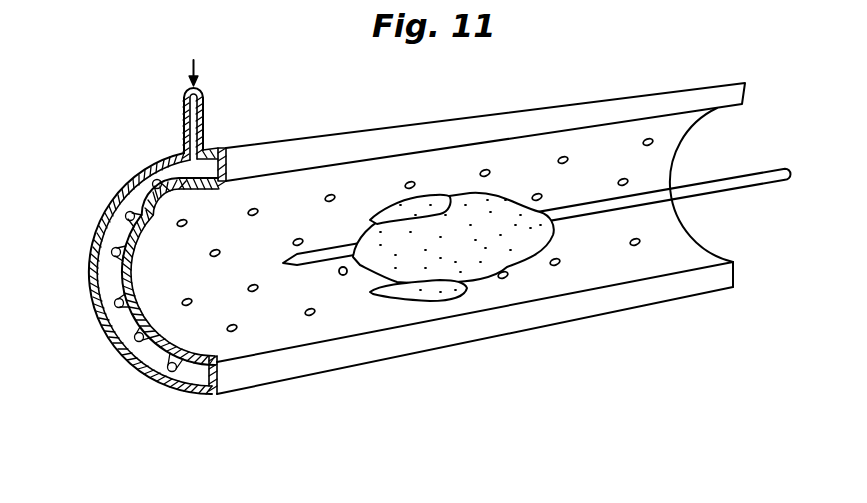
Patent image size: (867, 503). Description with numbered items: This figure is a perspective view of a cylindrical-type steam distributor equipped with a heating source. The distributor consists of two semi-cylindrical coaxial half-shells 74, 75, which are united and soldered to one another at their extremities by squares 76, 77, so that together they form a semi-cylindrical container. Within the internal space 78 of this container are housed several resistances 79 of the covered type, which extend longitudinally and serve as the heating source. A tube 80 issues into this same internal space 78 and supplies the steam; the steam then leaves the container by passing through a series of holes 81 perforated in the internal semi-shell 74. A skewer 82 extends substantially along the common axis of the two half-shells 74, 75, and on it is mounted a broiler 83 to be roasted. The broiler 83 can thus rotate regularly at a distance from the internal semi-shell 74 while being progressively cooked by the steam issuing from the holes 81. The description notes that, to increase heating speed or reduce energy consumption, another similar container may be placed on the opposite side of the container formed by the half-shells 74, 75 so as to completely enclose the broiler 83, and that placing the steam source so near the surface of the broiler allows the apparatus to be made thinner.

The internal semi-shell 74 is at (163, 360).
The external semi-cylindrical half-shell 75 is at (98, 237).
The square 76 is at (213, 395).
The square 77 is at (221, 148).
The internal space 78 is at (112, 273).
The resistances 79 is at (116, 338).
The tube 80 is at (184, 109).
The holes 81 is at (635, 245).
The skewer 82 is at (768, 173).
The broiler 83 is at (480, 282).